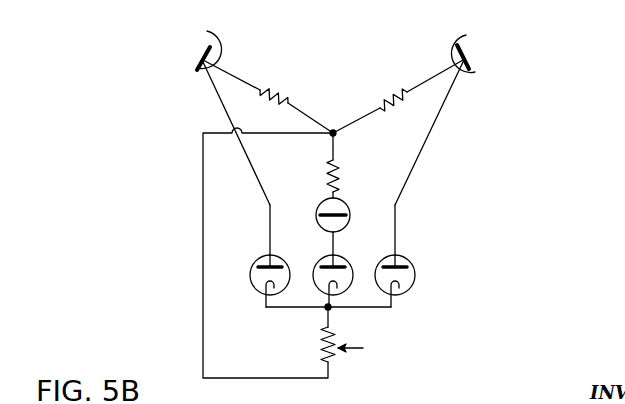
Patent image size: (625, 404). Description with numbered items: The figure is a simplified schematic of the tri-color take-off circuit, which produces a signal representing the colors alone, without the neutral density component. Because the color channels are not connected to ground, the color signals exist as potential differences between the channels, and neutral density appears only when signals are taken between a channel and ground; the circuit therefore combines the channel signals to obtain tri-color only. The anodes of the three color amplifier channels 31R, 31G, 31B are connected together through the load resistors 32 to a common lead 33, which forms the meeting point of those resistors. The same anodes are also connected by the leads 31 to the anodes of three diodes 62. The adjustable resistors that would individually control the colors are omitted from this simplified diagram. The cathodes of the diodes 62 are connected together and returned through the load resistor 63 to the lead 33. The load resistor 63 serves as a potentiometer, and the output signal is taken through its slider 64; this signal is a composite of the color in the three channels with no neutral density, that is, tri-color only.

The red color amplifier channel 31R is at (198, 58).
The green color amplifier channel 31G is at (476, 62).
The blue color amplifier channel 31B is at (345, 207).
The load resistors 32 is at (288, 99).
The common lead 33 is at (290, 136).
The leads 31 is at (330, 241).
The diodes 62 is at (406, 274).
The load resistor 63 is at (332, 334).
The slider 64 is at (363, 348).